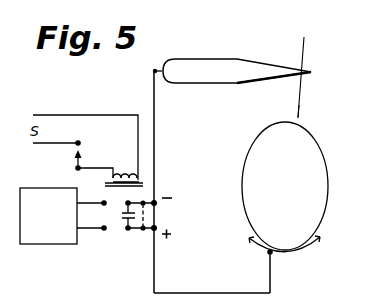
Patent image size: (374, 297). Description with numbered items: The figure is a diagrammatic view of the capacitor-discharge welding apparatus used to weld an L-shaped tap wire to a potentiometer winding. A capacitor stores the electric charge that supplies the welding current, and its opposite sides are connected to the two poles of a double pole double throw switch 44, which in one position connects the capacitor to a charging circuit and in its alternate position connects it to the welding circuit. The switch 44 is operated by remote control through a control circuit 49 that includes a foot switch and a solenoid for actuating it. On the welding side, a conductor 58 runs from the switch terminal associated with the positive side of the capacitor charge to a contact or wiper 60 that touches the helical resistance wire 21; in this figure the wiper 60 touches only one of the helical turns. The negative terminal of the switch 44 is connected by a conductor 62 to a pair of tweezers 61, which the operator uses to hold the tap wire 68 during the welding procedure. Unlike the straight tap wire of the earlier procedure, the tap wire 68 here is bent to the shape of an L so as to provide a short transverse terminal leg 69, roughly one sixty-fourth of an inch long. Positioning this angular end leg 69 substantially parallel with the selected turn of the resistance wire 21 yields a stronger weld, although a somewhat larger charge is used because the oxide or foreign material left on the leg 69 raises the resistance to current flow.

The helical resistance wire 21 is at (322, 147).
The double pole double throw switch 44 is at (147, 232).
The control circuit 49 is at (74, 113).
The conductor 58 is at (214, 293).
The contact or wiper 60 is at (271, 270).
The tweezers 61 is at (207, 57).
The conductor 62 is at (153, 82).
The tap wire 68 is at (305, 46).
The transverse terminal leg 69 is at (297, 117).